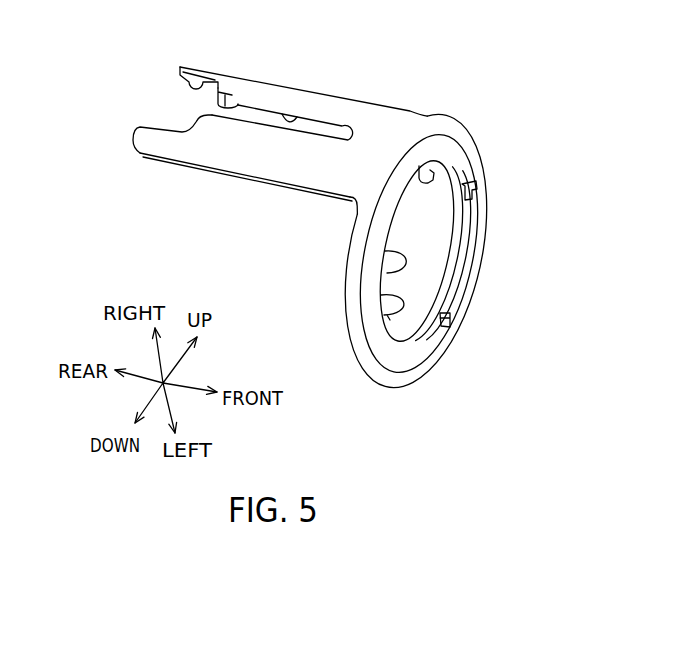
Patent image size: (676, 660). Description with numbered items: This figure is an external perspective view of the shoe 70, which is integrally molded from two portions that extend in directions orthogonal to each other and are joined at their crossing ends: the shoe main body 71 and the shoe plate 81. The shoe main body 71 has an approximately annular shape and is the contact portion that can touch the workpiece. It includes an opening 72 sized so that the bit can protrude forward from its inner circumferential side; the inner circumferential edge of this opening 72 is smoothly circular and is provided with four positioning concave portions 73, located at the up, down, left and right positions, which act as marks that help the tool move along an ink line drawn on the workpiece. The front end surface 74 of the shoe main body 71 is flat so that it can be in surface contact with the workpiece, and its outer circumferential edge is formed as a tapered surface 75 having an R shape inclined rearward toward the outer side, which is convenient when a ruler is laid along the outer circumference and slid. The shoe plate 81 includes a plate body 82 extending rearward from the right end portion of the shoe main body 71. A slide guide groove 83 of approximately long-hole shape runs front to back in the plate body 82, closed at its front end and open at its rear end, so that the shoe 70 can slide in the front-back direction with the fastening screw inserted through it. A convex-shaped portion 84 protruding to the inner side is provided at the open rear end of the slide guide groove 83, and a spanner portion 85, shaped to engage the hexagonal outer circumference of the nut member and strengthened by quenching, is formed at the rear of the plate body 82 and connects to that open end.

The shoe 70 is at (476, 326).
The shoe main body 71 is at (363, 358).
The opening 72 is at (386, 252).
The positioning concave portions 73 is at (435, 165).
The front end surface 74 is at (466, 292).
The tapered surface 75 is at (395, 372).
The shoe plate 81 is at (257, 153).
The plate body 82 is at (205, 142).
The slide guide groove 83 is at (302, 115).
The convex-shaped portion 84 is at (233, 100).
The spanner portion 85 is at (210, 53).